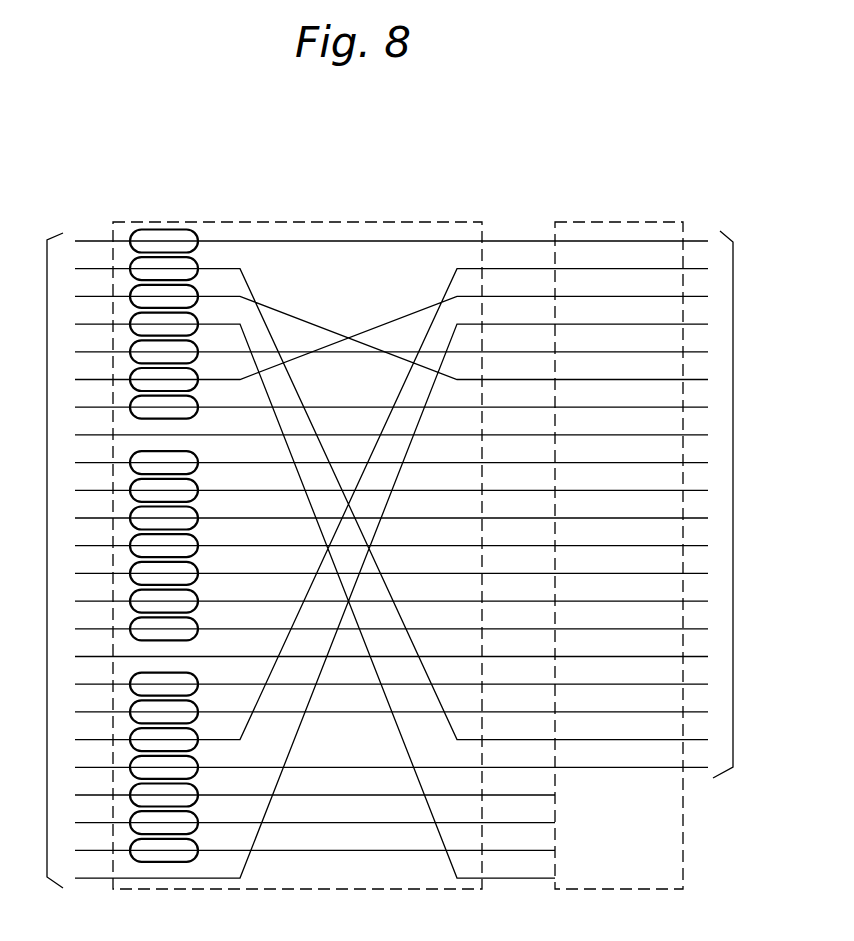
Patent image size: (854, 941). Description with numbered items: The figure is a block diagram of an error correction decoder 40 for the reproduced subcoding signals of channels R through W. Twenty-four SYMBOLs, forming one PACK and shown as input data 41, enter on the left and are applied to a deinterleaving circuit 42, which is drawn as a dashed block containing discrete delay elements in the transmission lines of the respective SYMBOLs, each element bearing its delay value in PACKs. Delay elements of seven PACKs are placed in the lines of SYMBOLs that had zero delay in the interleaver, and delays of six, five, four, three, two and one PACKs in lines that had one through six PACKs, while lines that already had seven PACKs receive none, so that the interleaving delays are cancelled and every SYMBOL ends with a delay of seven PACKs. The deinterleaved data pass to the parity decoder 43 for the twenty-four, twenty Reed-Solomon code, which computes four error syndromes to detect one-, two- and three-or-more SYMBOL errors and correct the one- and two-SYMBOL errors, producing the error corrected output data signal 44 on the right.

The error correction decoder 40 is at (424, 138).
The input data 41 is at (46, 290).
The deinterleaving circuit 42 is at (284, 218).
The parity decoder 43 is at (635, 218).
The error corrected output data signal 44 is at (735, 310).